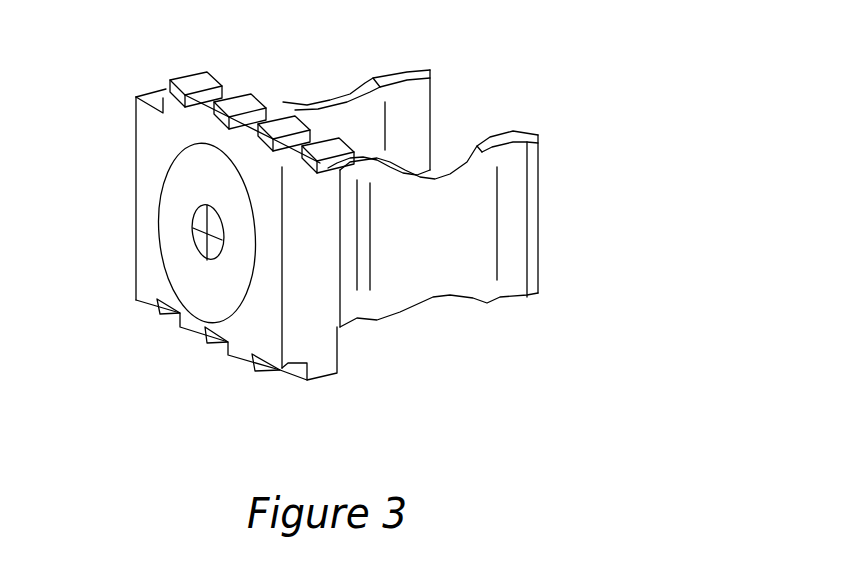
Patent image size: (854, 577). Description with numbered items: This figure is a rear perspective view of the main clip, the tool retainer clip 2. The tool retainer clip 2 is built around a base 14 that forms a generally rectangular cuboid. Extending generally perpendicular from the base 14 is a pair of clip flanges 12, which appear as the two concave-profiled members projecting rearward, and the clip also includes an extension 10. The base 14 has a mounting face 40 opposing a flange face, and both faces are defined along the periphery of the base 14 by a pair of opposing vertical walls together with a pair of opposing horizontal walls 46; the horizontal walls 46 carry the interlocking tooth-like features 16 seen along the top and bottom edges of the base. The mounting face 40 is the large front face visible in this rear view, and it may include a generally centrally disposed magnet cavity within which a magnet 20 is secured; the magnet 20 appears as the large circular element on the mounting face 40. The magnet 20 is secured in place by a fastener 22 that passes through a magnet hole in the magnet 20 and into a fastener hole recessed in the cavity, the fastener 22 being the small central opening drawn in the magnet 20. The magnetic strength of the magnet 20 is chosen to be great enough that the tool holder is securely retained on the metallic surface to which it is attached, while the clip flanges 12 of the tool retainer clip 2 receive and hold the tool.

The tool retainer clip 2 is at (470, 92).
The extension 10 is at (305, 160).
The clip flanges 12 is at (358, 120).
The base 14 is at (143, 195).
The teeth 16 is at (197, 80).
The magnet 20 is at (180, 262).
The fastener 22 is at (193, 237).
The mounting face 40 is at (147, 165).
The horizontal walls 46 is at (140, 97).